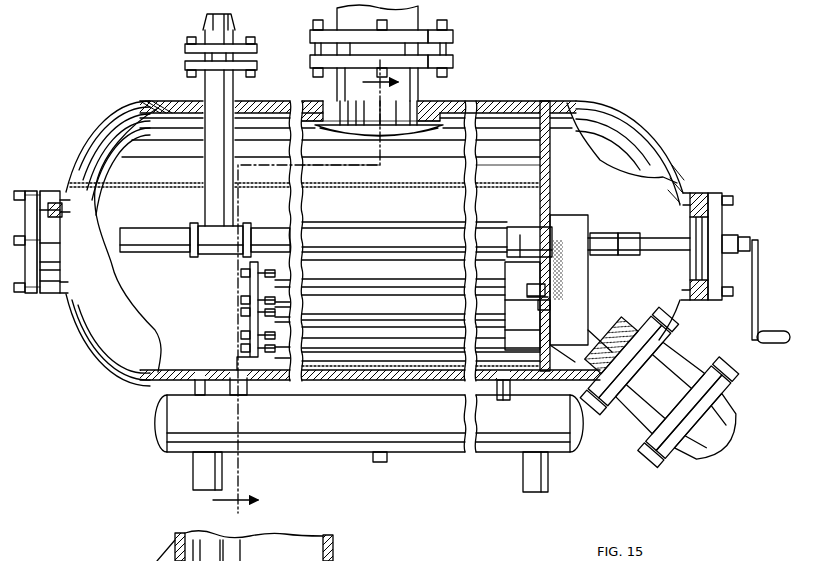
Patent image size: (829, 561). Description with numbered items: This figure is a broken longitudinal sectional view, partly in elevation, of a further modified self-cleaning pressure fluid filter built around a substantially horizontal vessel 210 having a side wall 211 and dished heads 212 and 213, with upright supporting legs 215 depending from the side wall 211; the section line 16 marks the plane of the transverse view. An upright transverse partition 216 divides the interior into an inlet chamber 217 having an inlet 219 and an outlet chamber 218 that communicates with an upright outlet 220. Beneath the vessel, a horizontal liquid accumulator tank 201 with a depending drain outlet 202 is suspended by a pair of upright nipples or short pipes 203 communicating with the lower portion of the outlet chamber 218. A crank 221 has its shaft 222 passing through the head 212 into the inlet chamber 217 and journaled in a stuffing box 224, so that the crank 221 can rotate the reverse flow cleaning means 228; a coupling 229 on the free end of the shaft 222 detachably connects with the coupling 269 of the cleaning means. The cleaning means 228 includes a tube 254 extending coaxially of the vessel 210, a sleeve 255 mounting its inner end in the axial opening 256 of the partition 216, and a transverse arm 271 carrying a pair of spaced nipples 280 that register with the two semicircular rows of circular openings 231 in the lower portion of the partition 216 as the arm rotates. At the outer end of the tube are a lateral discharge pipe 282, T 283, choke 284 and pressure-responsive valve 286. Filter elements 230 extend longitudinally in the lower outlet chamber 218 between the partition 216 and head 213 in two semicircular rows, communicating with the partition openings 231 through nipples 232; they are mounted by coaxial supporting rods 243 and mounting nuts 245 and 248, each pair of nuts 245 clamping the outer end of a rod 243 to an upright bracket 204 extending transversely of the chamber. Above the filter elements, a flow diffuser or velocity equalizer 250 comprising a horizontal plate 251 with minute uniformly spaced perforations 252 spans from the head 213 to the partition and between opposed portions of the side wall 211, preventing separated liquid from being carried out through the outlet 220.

The section line 16 is at (295, 287).
The liquid accumulator tank 201 is at (490, 455).
The drain outlet 202 is at (376, 462).
The nipples or short pipes 203 is at (500, 397).
The supporting member or bracket 204 is at (280, 270).
The vessel 210 is at (625, 130).
The side wall 211 is at (505, 106).
The dished head 212 is at (663, 154).
The dished head 213 is at (103, 352).
The supporting legs 215 is at (192, 468).
The transverse partition or wall 216 is at (551, 182).
The inlet chamber 217 is at (583, 160).
The outlet chamber 218 is at (150, 366).
The inlet 219 is at (655, 462).
The outlet 220 is at (420, 99).
The crank 221 is at (757, 312).
The shaft 222 is at (640, 252).
The stuffing box 224 is at (734, 238).
The reverse flow cleaning means 228 is at (420, 226).
The coupling 229 is at (636, 238).
The filter elements 230 is at (376, 380).
The circular openings 231 is at (548, 298).
The nipples 232 is at (525, 345).
The supporting rods 243 is at (242, 311).
The mounting nuts 245 is at (244, 339).
The mounting nuts 248 is at (285, 310).
The flow diffuser or velocity equalizer 250 is at (395, 186).
The flat member or plate 251 is at (506, 187).
The openings or perforations 252 is at (183, 189).
The pipe or tube 254 is at (335, 230).
The sleeve 255 is at (526, 228).
The axial opening 256 is at (553, 237).
The coupling 269 is at (608, 233).
The transverse arm 271 is at (545, 290).
The nipples 280 is at (552, 310).
The lateral discharge conductor or pipe 282 is at (207, 20).
The T 283 is at (218, 257).
The choke 284 is at (185, 56).
The pressure-responsive valve 286 is at (165, 253).